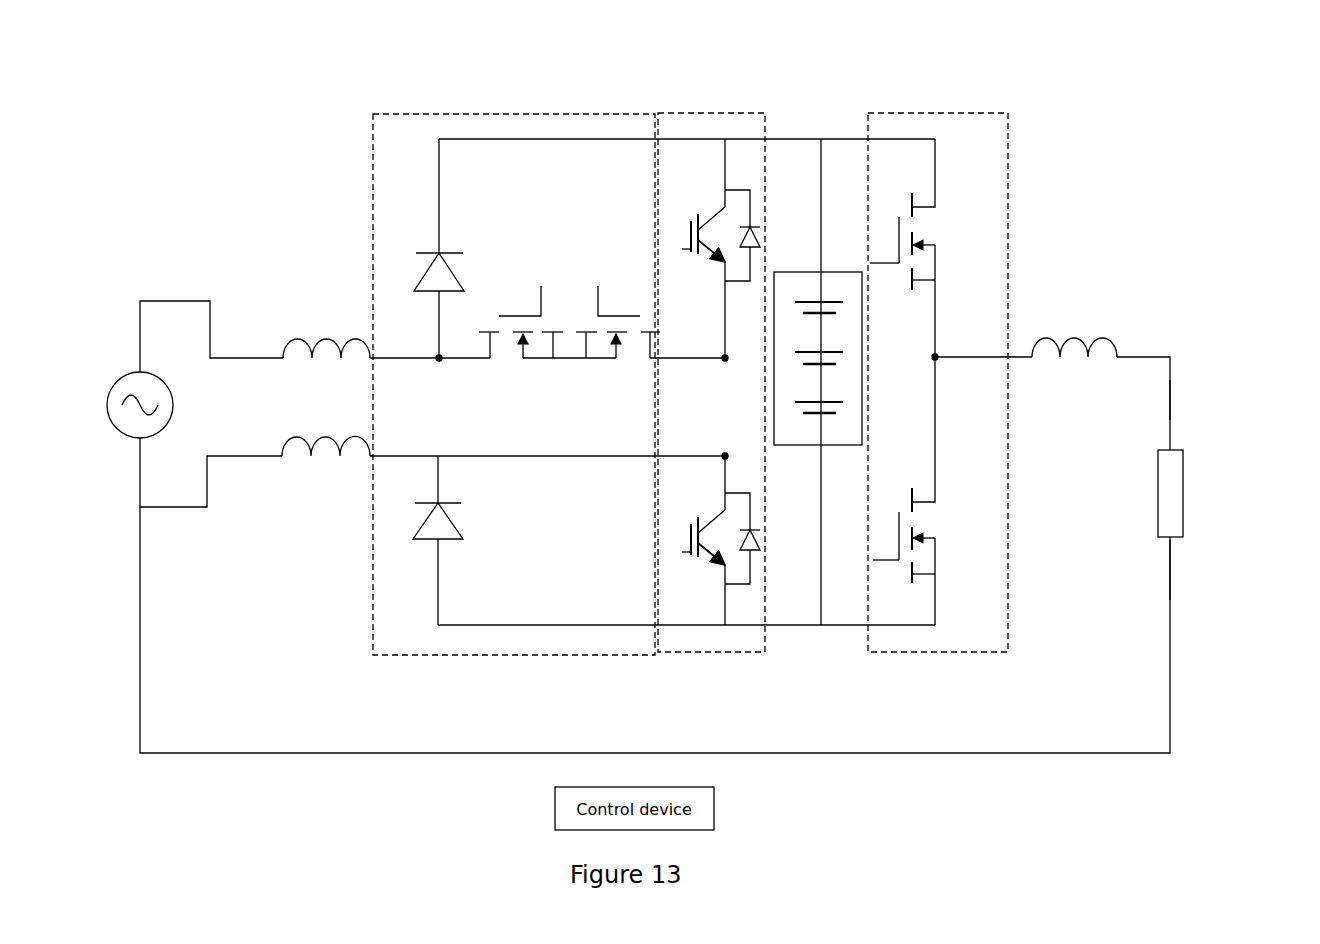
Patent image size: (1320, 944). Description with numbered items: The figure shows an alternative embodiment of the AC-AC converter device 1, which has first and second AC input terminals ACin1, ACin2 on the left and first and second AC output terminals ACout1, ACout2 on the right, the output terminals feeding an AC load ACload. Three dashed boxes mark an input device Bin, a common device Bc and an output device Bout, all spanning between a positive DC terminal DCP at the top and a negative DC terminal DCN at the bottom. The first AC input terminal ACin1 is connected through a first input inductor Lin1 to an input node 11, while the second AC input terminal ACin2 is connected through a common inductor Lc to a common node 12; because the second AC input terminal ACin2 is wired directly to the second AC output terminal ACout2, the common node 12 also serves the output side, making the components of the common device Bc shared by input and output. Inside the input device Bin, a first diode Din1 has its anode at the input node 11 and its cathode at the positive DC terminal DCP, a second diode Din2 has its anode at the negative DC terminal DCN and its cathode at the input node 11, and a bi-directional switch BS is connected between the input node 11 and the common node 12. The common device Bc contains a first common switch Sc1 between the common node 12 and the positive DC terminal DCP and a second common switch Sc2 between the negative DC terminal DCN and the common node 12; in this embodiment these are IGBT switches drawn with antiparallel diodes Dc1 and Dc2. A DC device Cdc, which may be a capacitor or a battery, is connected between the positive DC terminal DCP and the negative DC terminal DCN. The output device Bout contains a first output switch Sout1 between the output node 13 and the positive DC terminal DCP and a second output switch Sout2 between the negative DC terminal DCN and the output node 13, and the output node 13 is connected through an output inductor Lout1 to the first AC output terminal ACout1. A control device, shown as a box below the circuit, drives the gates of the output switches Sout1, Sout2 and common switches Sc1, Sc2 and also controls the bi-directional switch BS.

The AC-AC converter device 1 is at (207, 187).
The input node 11 is at (443, 364).
The common node 12 is at (715, 438).
The output node 13 is at (949, 370).
The input device Bin is at (428, 112).
The common device Bc is at (713, 112).
The output device Bout is at (997, 110).
The bi-directional switch BS is at (565, 262).
The first diode Din1 is at (424, 248).
The second diode Din2 is at (424, 540).
The first input inductor Lin1 is at (386, 326).
The common inductor Lc is at (503, 464).
The first common switch Sc1 is at (699, 248).
The second common switch Sc2 is at (697, 540).
The antiparallel diode Dc1 is at (756, 235).
The antiparallel diode Dc2 is at (756, 538).
The DC device Cdc is at (818, 382).
The first output switch Sout1 is at (932, 248).
The second output switch Sout2 is at (930, 491).
The output inductor Lout1 is at (1052, 374).
The AC load ACload is at (1208, 493).
The first AC input terminal ACin1 is at (195, 348).
The second AC input terminal ACin2 is at (176, 472).
The first AC output terminal ACout1 is at (1210, 400).
The second AC output terminal ACout2 is at (1207, 570).
The positive DC terminal DCP is at (687, 124).
The negative DC terminal DCN is at (686, 645).